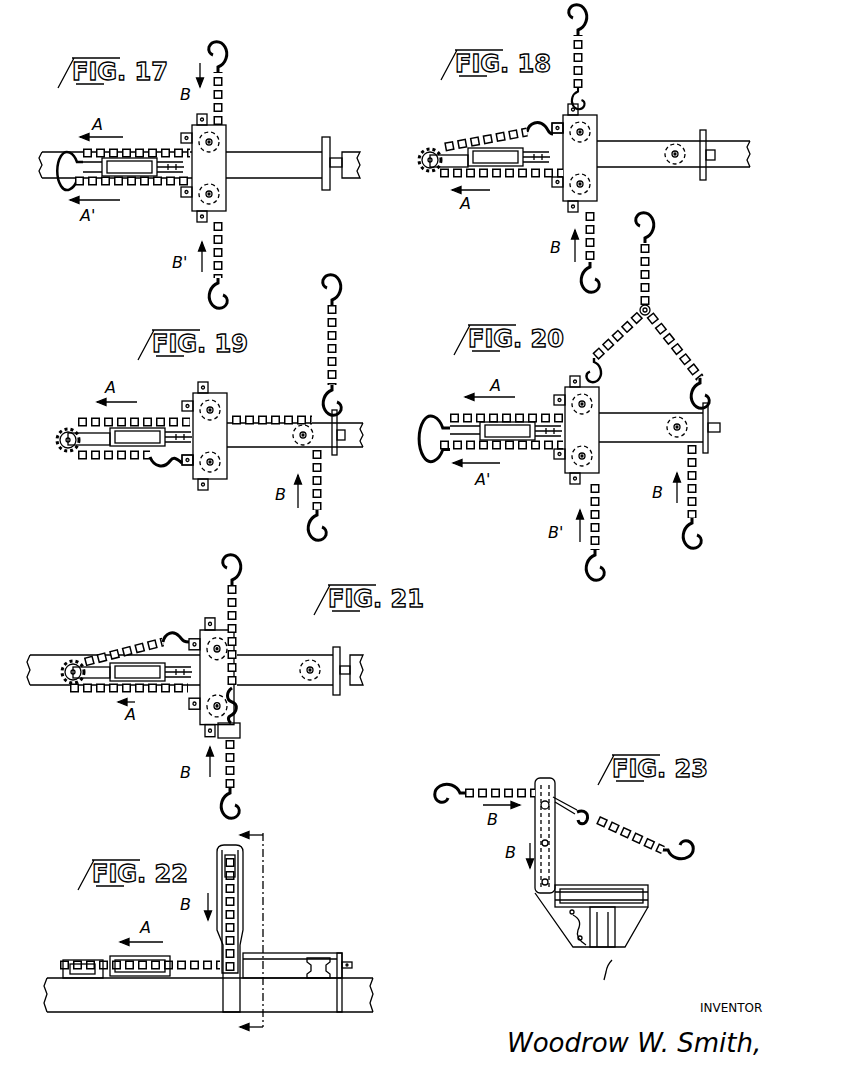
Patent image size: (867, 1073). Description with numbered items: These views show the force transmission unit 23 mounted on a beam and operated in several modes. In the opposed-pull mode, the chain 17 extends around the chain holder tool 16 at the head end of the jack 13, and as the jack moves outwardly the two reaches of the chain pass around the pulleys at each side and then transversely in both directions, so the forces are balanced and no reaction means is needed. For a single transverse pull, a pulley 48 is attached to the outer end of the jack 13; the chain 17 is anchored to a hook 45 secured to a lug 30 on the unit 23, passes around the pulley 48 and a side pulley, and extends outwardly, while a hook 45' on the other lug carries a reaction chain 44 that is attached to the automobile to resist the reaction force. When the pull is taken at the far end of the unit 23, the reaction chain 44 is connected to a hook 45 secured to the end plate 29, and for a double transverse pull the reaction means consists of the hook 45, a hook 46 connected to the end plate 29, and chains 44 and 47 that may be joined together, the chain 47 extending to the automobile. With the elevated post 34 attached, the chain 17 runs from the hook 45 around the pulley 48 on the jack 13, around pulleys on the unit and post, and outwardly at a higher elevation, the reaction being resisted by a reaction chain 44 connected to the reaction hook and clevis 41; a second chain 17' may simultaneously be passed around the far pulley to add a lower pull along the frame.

In FIG. 17, the jack 13 is at (133, 186).
In FIG. 18, the jack 13 is at (470, 147).
In FIG. 19, the jack 13 is at (151, 437).
In FIG. 20, the jack 13 is at (506, 431).
In FIG. 21, the jack 13 is at (101, 661).
In FIG. 17, the chain holder tool 16 is at (74, 156).
In FIG. 20, the chain holder tool 16 is at (428, 421).
In FIG. 17, the chain 17 is at (168, 111).
In FIG. 18, the chain 17 is at (532, 212).
In FIG. 19, the chain 17 is at (218, 465).
In FIG. 20, the chain 17 is at (588, 483).
In FIG. 21, the chain 17 is at (170, 730).
In FIG. 22, the chain 17 is at (181, 915).
In FIG. 23, the chain 17 is at (485, 781).
In FIG. 17, the second chain 17' is at (239, 265).
In FIG. 20, the second chain 17' is at (614, 532).
In FIG. 17, the force transmission unit 23 is at (274, 153).
In FIG. 18, the force transmission unit 23 is at (636, 163).
In FIG. 19, the force transmission unit 23 is at (248, 442).
In FIG. 21, the force transmission unit 23 is at (272, 661).
In FIG. 22, the force transmission unit 23 is at (292, 955).
In FIG. 23, the force transmission unit 23 is at (650, 896).
In FIG. 17, the end plate 29 is at (330, 150).
In FIG. 18, the lug 30 is at (556, 122).
In FIG. 19, the lug 30 is at (188, 472).
In FIG. 21, the elevated post 34 is at (242, 733).
In FIG. 22, the elevated post 34 is at (245, 906).
In FIG. 21, the reaction hook and clevis 41 is at (242, 713).
In FIG. 23, the reaction hook and clevis 41 is at (560, 808).
In FIG. 18, the reaction chain 44 is at (586, 67).
In FIG. 19, the reaction chain 44 is at (330, 345).
In FIG. 20, the reaction chain 44 is at (623, 331).
In FIG. 21, the reaction chain 44 is at (237, 634).
In FIG. 23, the reaction chain 44 is at (630, 831).
In FIG. 18, the hook 45 is at (525, 122).
In FIG. 19, the hook 45 is at (150, 484).
In FIG. 20, the hook 45 is at (609, 370).
In FIG. 21, the hook 45 is at (164, 631).
In FIG. 18, the hook 45' is at (603, 96).
In FIG. 19, the hook 46 is at (341, 393).
In FIG. 20, the hook 46 is at (713, 393).
In FIG. 20, the chain 47 is at (652, 311).
In FIG. 18, the pulley 48 is at (431, 148).
In FIG. 19, the pulley 48 is at (66, 428).
In FIG. 21, the pulley 48 is at (73, 660).